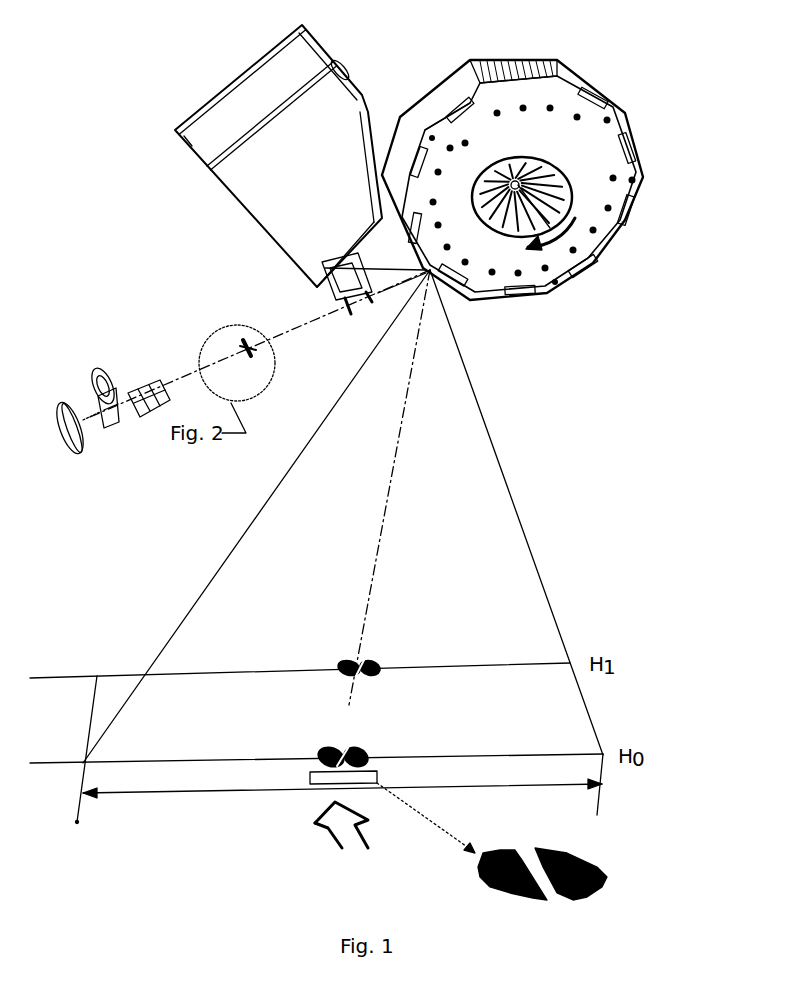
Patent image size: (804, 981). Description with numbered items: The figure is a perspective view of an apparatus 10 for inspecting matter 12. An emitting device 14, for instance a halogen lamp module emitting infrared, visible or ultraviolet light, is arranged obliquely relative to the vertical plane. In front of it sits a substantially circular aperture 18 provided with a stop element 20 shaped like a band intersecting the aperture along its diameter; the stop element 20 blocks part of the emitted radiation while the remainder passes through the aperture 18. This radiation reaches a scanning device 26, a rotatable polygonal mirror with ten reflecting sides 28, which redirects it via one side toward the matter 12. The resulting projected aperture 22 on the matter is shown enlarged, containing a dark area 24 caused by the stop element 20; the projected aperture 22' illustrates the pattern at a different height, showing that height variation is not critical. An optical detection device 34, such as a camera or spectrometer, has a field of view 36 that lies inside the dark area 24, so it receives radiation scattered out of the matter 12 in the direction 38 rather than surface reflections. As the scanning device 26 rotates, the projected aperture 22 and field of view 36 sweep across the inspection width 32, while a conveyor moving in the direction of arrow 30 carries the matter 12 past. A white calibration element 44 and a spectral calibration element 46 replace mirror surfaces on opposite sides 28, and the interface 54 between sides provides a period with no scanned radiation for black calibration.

The apparatus 10 is at (81, 41).
The matter 12 is at (315, 802).
The emitting device 14 is at (67, 378).
The aperture 18 is at (260, 343).
The stop element 20 is at (248, 348).
The projected aperture 22 is at (507, 899).
The projected aperture at height H1 22' is at (385, 652).
The dark area 24 is at (574, 892).
The scanning device 26 is at (544, 180).
The reflecting sides 28 is at (534, 163).
The arrow indicating conveying direction 30 is at (360, 840).
The inspection width 32 is at (342, 810).
The optical detection device 34 is at (300, 169).
The field of view 36 is at (332, 745).
The direction 38 is at (343, 516).
The white calibration element 44 is at (547, 54).
The spectral calibration element 46 is at (540, 306).
The interface 54 is at (417, 96).